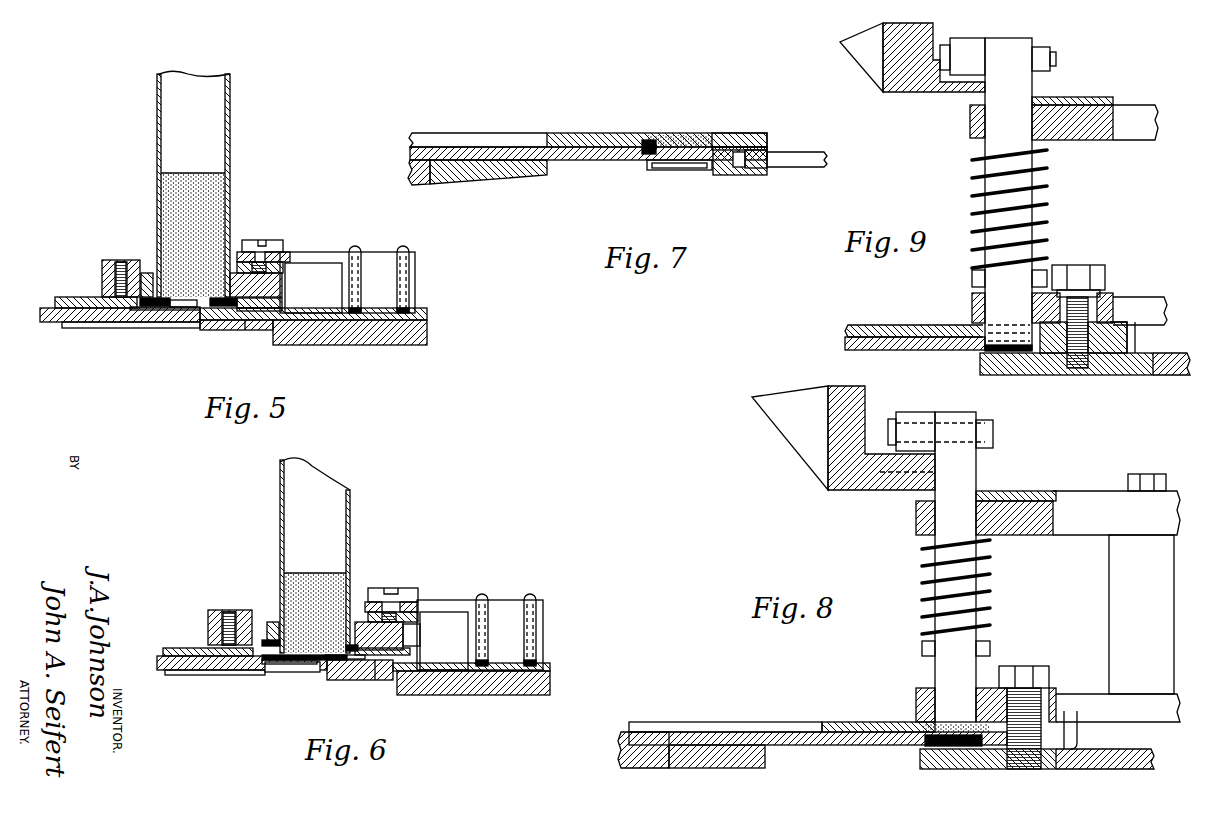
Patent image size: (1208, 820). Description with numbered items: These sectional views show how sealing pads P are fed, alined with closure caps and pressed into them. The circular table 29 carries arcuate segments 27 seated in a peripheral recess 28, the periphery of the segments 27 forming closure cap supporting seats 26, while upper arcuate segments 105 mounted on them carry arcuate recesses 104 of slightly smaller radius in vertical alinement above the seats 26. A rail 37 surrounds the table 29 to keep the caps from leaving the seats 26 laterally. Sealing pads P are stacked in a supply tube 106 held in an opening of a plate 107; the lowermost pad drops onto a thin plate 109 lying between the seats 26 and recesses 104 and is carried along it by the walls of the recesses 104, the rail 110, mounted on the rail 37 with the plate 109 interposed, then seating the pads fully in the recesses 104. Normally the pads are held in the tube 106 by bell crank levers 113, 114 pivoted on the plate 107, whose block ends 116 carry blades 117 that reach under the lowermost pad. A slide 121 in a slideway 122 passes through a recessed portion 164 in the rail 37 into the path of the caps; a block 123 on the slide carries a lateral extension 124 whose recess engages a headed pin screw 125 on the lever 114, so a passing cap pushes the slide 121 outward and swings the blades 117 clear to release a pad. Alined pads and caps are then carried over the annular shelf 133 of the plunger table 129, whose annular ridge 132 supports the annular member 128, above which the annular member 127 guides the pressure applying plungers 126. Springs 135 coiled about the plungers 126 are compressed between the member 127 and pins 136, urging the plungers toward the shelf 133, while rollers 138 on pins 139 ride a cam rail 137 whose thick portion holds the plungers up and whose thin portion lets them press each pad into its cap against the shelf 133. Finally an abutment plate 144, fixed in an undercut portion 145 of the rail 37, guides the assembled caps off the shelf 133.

In FIG. 5, the closure cap supporting seats 26 is at (160, 329).
In FIG. 6, the closure cap supporting seats 26 is at (262, 672).
In FIG. 7, the closure cap supporting seats 26 is at (649, 170).
In FIG. 5, the arcuate segments 27 is at (110, 324).
In FIG. 6, the arcuate segments 27 is at (227, 671).
In FIG. 7, the arcuate segments 27 is at (576, 161).
In FIG. 9, the arcuate segments 27 is at (870, 343).
In FIG. 8, the arcuate segments 27 is at (828, 746).
In FIG. 7, the recess 28 is at (503, 175).
In FIG. 8, the recess 28 is at (763, 768).
In FIG. 7, the circular table 29 is at (475, 182).
In FIG. 8, the circular table 29 is at (705, 768).
In FIG. 5, the rail 37 is at (237, 331).
In FIG. 6, the rail 37 is at (360, 680).
In FIG. 7, the rail 37 is at (727, 175).
In FIG. 5, the arcuate recesses 104 is at (192, 307).
In FIG. 6, the arcuate recesses 104 is at (290, 670).
In FIG. 7, the arcuate recesses 104 is at (647, 140).
In FIG. 5, the arcuate segments 105 is at (72, 301).
In FIG. 6, the arcuate segments 105 is at (168, 648).
In FIG. 7, the arcuate segments 105 is at (587, 133).
In FIG. 9, the arcuate segments 105 is at (905, 325).
In FIG. 8, the arcuate segments 105 is at (837, 722).
In FIG. 5, the tube 106 is at (231, 129).
In FIG. 6, the tube 106 is at (353, 520).
In FIG. 5, the plate 107 is at (147, 272).
In FIG. 6, the plate 107 is at (272, 621).
In FIG. 5, the thin plate 109 is at (185, 310).
In FIG. 6, the thin plate 109 is at (345, 672).
In FIG. 7, the thin plate 109 is at (772, 148).
In FIG. 5, the rail 110 is at (283, 300).
In FIG. 6, the rail 110 is at (411, 655).
In FIG. 7, the rail 110 is at (762, 133).
In FIG. 5, the bell crank lever 113 is at (106, 261).
In FIG. 6, the bell crank lever 113 is at (214, 610).
In FIG. 5, the bell crank lever 114 is at (284, 267).
In FIG. 6, the bell crank lever 114 is at (419, 617).
In FIG. 5, the block ends 116 is at (103, 284).
In FIG. 6, the block ends 116 is at (208, 628).
In FIG. 5, the blades 117 is at (148, 306).
In FIG. 6, the blades 117 is at (267, 620).
In FIG. 5, the slide 121 is at (267, 321).
In FIG. 6, the slide 121 is at (551, 670).
In FIG. 5, the slideway 122 is at (332, 346).
In FIG. 6, the slideway 122 is at (490, 694).
In FIG. 5, the block 123 is at (416, 282).
In FIG. 6, the block 123 is at (544, 620).
In FIG. 5, the lateral extension 124 is at (314, 257).
In FIG. 6, the lateral extension 124 is at (441, 606).
In FIG. 5, the headed pin screw 125 is at (263, 252).
In FIG. 6, the headed pin screw 125 is at (393, 603).
In FIG. 9, the pressure applying plungers 126 is at (1027, 206).
In FIG. 8, the pressure applying plungers 126 is at (979, 609).
In FIG. 9, the annular member 127 is at (1135, 135).
In FIG. 8, the annular member 127 is at (1083, 534).
In FIG. 9, the annular member 128 is at (1137, 302).
In FIG. 8, the annular member 128 is at (1079, 698).
In FIG. 9, the table 129 is at (1180, 375).
In FIG. 8, the table 129 is at (1141, 769).
In FIG. 9, the annular ridge 132 is at (1127, 347).
In FIG. 8, the annular ridge 132 is at (1086, 736).
In FIG. 9, the annular shelf 133 is at (1022, 365).
In FIG. 8, the annular shelf 133 is at (962, 769).
In FIG. 9, the springs 135 is at (975, 198).
In FIG. 8, the springs 135 is at (924, 607).
In FIG. 9, the pins 136 is at (1045, 272).
In FIG. 8, the pins 136 is at (991, 651).
In FIG. 9, the cam rail 137 is at (912, 93).
In FIG. 8, the cam rail 137 is at (857, 491).
In FIG. 9, the rollers 138 is at (968, 44).
In FIG. 8, the rollers 138 is at (901, 412).
In FIG. 9, the pins 139 is at (1057, 58).
In FIG. 8, the pins 139 is at (993, 434).
In FIG. 7, the abutment plate 144 is at (812, 167).
In FIG. 7, the undercut portion 145 is at (752, 172).
In FIG. 5, the recessed portion 164 is at (256, 331).
In FIG. 6, the recessed portion 164 is at (374, 681).
In FIG. 5, the sealing pads P is at (228, 174).
In FIG. 6, the sealing pads P is at (326, 574).
In FIG. 7, the sealing pads P is at (680, 135).
In FIG. 9, the sealing pads P is at (992, 368).
In FIG. 8, the sealing pads P is at (914, 717).
In FIG. 6, the cup C is at (281, 672).
In FIG. 7, the cup C is at (698, 170).
In FIG. 9, the cup C is at (985, 356).
In FIG. 8, the cup C is at (925, 752).